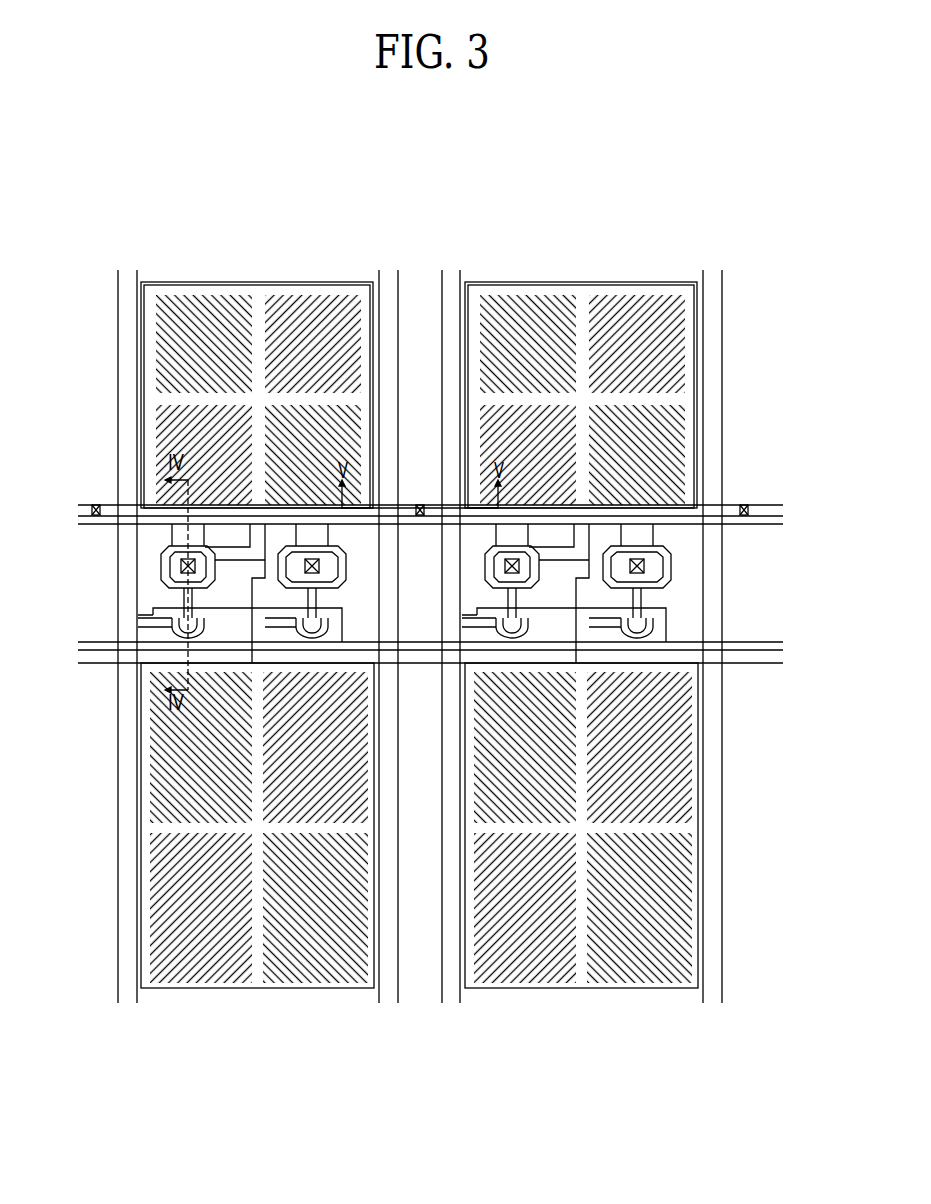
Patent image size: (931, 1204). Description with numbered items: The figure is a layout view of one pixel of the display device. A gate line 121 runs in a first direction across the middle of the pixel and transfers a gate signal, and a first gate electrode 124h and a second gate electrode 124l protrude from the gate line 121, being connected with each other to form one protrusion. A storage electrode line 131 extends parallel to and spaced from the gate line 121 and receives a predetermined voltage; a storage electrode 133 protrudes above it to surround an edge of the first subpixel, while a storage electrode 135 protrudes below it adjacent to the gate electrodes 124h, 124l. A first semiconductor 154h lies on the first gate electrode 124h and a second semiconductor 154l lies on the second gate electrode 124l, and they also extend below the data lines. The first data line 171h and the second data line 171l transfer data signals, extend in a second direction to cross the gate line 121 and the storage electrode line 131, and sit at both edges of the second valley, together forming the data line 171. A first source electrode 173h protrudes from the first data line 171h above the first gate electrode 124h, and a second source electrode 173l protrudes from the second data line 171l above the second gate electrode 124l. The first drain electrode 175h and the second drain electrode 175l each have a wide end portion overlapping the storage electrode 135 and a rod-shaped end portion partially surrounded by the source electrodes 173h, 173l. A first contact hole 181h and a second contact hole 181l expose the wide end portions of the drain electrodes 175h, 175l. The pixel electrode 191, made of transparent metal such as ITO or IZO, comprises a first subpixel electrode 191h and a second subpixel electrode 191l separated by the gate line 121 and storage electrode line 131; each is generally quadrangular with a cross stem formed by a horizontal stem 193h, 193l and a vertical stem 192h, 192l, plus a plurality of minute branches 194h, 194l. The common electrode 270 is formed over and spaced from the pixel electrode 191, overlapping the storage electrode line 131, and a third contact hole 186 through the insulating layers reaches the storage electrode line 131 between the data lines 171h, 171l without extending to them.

The vertical stem 192h is at (257, 305).
The vertical stem 192l is at (257, 985).
The minute branches 194h is at (178, 371).
The minute branches 194l is at (180, 796).
The horizontal stem 193h is at (650, 400).
The horizontal stem 193l is at (655, 822).
The first data line 171h is at (118, 333).
The second data line 171l is at (722, 414).
The data line 171 is at (434, 636).
The first subpixel electrode 191h is at (704, 297).
The second subpixel electrode 191l is at (705, 860).
The pixel electrode 191 is at (477, 656).
The storage electrode line 131 is at (762, 505).
The storage electrode 133 is at (698, 342).
The storage electrode 135 is at (665, 533).
The gate line 121 is at (761, 666).
The first gate electrode 124h is at (138, 612).
The second gate electrode 124l is at (662, 614).
The first source electrode 173h is at (186, 638).
The second source electrode 173l is at (640, 641).
The first drain electrode 175h is at (184, 605).
The second drain electrode 175l is at (647, 598).
The first semiconductor 154h is at (216, 616).
The second semiconductor 154l is at (624, 614).
The first contact hole 181h is at (180, 564).
The second contact hole 181l is at (646, 567).
The third contact hole 186 is at (96, 505).
The common electrode 270 is at (783, 665).